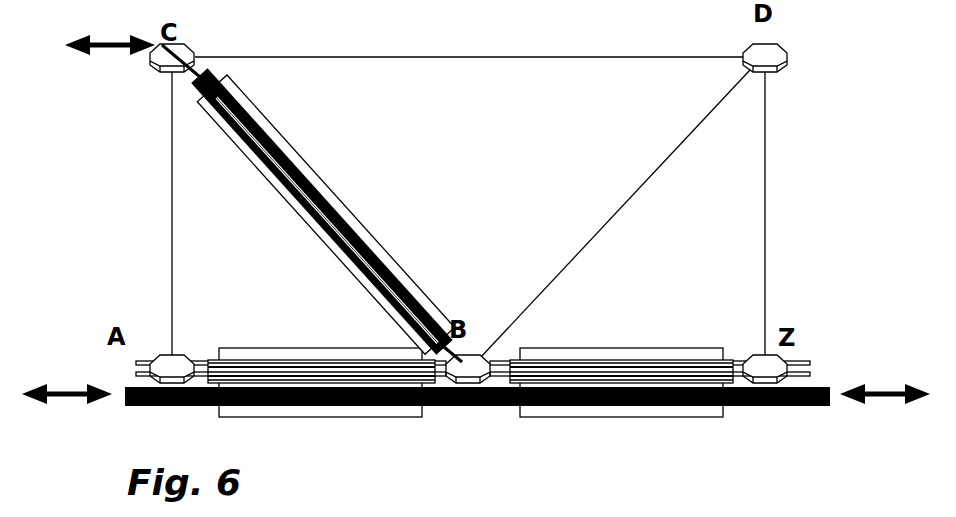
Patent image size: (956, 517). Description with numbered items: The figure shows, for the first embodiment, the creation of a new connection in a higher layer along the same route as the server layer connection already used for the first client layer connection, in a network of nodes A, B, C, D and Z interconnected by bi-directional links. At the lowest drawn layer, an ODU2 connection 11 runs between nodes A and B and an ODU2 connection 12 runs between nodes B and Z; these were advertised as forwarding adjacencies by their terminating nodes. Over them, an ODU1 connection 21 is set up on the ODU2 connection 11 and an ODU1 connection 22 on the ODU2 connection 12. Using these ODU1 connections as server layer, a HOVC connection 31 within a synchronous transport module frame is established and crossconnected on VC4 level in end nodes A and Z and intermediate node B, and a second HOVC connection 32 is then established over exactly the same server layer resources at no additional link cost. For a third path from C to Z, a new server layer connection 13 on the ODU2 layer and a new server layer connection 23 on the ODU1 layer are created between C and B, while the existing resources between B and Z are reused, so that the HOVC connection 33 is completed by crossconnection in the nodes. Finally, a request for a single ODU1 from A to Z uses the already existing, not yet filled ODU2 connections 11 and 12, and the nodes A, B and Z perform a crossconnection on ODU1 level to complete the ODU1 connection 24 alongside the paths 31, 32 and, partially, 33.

The ODU2 connection 11 is at (321, 410).
The ODU2 connection 12 is at (621, 410).
The server layer connection 13 is at (350, 193).
The ODU1 connection 21 is at (320, 411).
The ODU1 connection 22 is at (621, 411).
The server layer connection 23 is at (348, 187).
The ODU1 connection 24 is at (477, 430).
The HOVC connection 31 is at (321, 408).
The HOVC connection 32 is at (650, 403).
The HOVC connection 33 is at (357, 193).